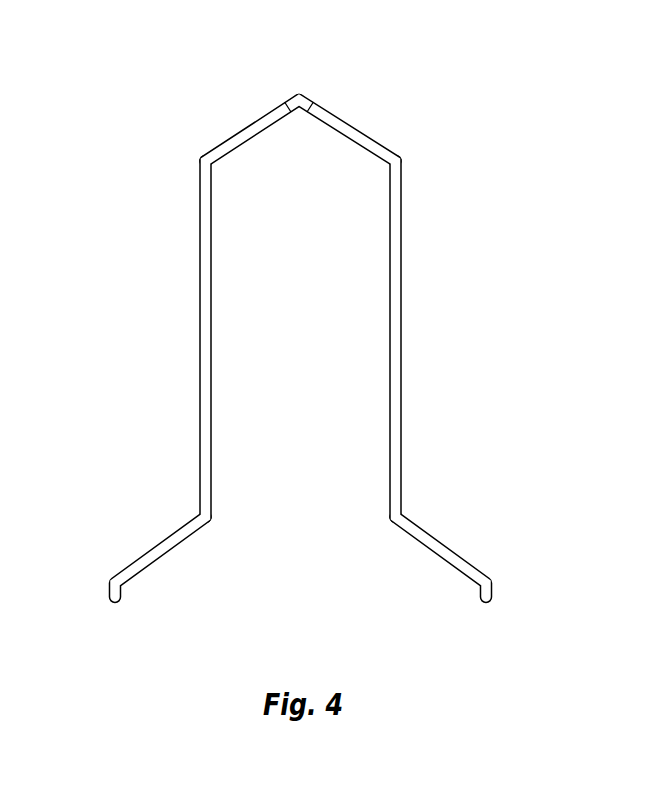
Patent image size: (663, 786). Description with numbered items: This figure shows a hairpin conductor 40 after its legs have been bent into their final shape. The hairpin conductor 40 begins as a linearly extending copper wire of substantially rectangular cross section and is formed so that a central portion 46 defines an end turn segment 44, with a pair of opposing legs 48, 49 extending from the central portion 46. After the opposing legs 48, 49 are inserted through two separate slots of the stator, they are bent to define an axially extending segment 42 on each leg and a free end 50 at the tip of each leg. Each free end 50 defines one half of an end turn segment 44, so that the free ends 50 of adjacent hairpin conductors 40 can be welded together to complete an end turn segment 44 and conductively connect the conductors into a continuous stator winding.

The hairpin conductor 40 is at (297, 299).
The axially extending segment 42 is at (297, 327).
The end turn segment 44 is at (369, 133).
The central portion 46 is at (238, 131).
The opposing leg 48 is at (199, 297).
The opposing leg 49 is at (402, 300).
The free end 50 is at (107, 593).